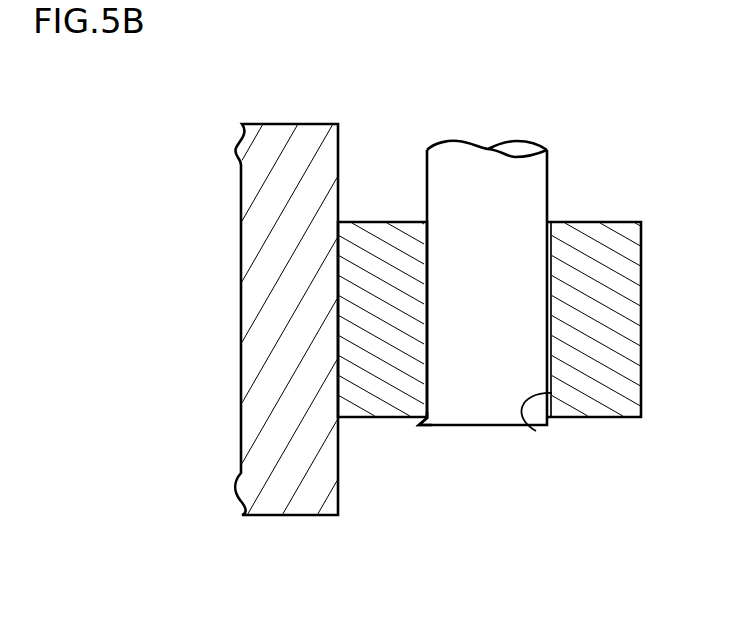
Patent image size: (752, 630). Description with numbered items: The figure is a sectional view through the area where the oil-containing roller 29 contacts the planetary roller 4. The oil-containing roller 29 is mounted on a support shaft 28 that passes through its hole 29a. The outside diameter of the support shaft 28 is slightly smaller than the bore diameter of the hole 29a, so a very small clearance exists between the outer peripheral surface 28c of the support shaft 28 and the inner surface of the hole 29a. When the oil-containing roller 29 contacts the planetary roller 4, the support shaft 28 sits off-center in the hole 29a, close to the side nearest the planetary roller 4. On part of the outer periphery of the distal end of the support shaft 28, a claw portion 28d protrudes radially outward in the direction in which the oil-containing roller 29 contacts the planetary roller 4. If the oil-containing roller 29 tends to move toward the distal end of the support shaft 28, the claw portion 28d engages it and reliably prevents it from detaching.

The planetary roller 4 is at (340, 160).
The support shaft 28 is at (497, 401).
The outer peripheral surface 28c is at (548, 248).
The claw portion 28d is at (422, 424).
The oil-containing roller 29 is at (379, 391).
The hole 29a is at (536, 431).